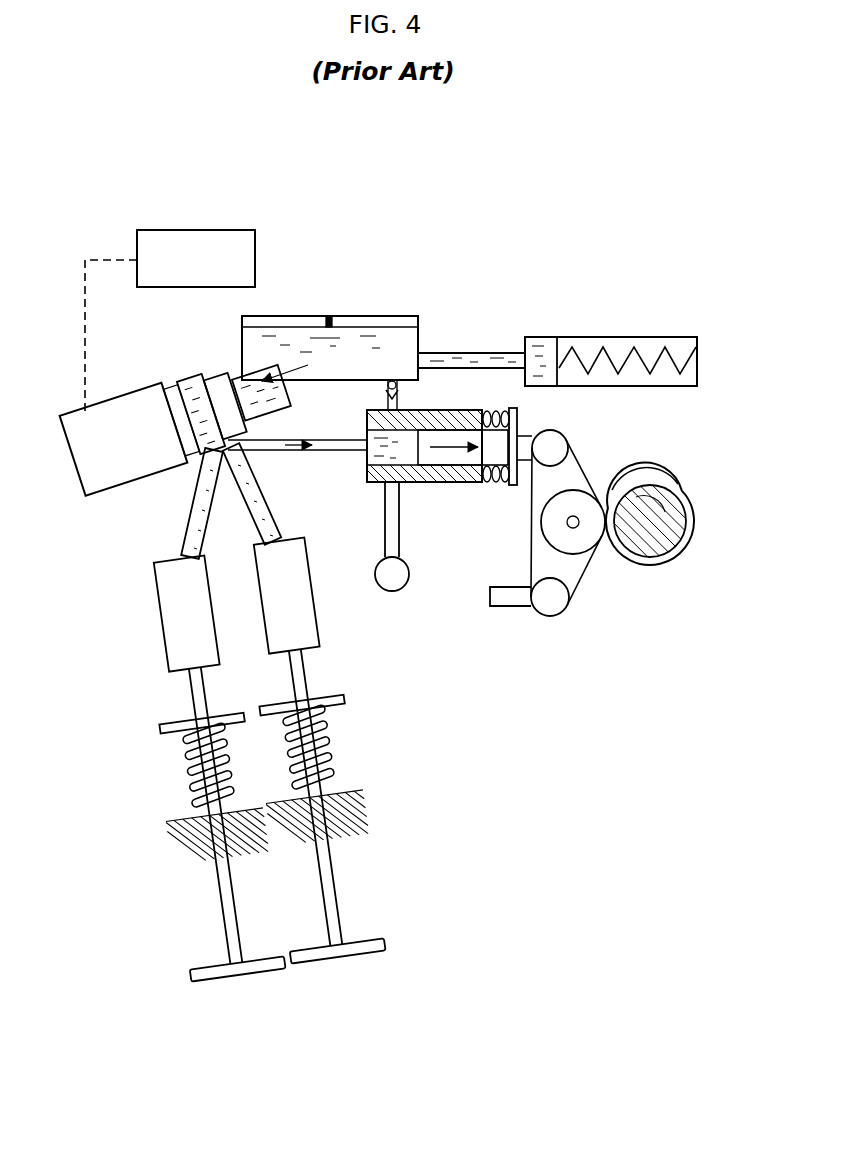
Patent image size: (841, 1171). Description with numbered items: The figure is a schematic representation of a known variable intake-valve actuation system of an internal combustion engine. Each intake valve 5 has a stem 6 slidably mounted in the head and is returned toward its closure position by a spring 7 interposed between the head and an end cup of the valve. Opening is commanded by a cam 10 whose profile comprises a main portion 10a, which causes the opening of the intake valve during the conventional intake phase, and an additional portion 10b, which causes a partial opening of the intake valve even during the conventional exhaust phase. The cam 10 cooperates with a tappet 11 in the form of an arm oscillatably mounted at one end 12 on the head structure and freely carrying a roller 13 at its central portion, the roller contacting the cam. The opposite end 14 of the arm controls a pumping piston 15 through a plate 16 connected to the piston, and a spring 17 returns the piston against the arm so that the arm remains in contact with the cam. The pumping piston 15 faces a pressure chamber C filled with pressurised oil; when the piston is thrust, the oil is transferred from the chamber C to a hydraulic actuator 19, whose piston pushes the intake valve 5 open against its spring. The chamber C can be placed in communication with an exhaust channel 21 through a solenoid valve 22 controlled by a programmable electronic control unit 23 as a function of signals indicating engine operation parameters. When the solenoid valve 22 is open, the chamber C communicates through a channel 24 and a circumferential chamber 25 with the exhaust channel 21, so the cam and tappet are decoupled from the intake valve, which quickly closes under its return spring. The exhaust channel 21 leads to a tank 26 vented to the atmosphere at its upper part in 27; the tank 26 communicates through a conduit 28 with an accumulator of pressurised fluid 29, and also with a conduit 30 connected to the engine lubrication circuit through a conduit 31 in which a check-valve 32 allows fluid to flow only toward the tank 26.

The intake valve 5 is at (184, 990).
The stem 6 is at (224, 908).
The spring 7 is at (186, 766).
The cam 10 is at (632, 566).
The main portion 10a is at (648, 462).
The additional portion 10b is at (690, 507).
The tappet 11 is at (527, 532).
The end 12 is at (560, 617).
The roller 13 is at (590, 492).
The opposite end 14 is at (559, 430).
The pumping piston 15 is at (438, 483).
The plate 16 is at (512, 408).
The spring 17 is at (490, 483).
The hydraulic actuator 19 is at (154, 601).
The exhaust channel 21 is at (286, 402).
The solenoid valve 22 is at (128, 393).
The electronic control unit 23 is at (203, 240).
The channel 24 is at (278, 455).
The circumferential chamber 25 is at (190, 378).
The tank 26 is at (378, 350).
The vent 27 is at (335, 316).
The conduit 28 is at (468, 352).
The accumulator of pressurised fluid 29 is at (594, 335).
The conduit 30 is at (402, 591).
The conduit 31 is at (385, 504).
The check-valve 32 is at (401, 387).
The pressure chamber C is at (367, 455).